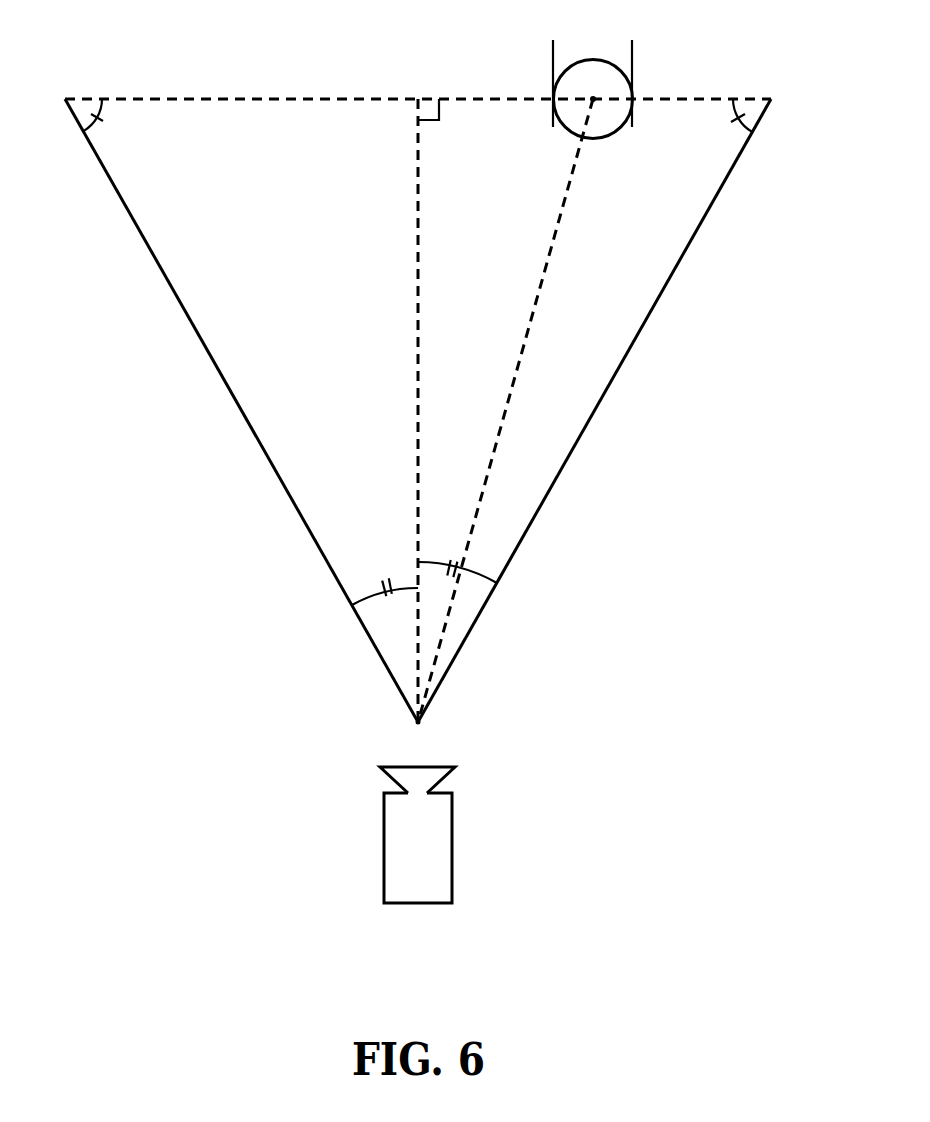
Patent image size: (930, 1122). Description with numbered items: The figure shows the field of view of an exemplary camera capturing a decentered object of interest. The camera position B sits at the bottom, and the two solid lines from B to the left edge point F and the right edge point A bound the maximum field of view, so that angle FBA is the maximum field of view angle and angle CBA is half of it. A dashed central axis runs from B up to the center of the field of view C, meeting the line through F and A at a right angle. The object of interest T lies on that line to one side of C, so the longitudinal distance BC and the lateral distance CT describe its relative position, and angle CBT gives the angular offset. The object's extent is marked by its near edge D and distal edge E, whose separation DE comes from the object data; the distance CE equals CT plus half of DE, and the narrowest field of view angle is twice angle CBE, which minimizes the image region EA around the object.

The left edge point of the maximum field of view F is at (77, 95).
The right edge point of the maximum field of view A is at (762, 96).
The center of the camera's field of view C is at (428, 391).
The camera position B is at (424, 662).
The object of interest position T is at (525, 391).
The near edge of the object of interest D is at (552, 67).
The distal edge of the object of interest E is at (633, 67).